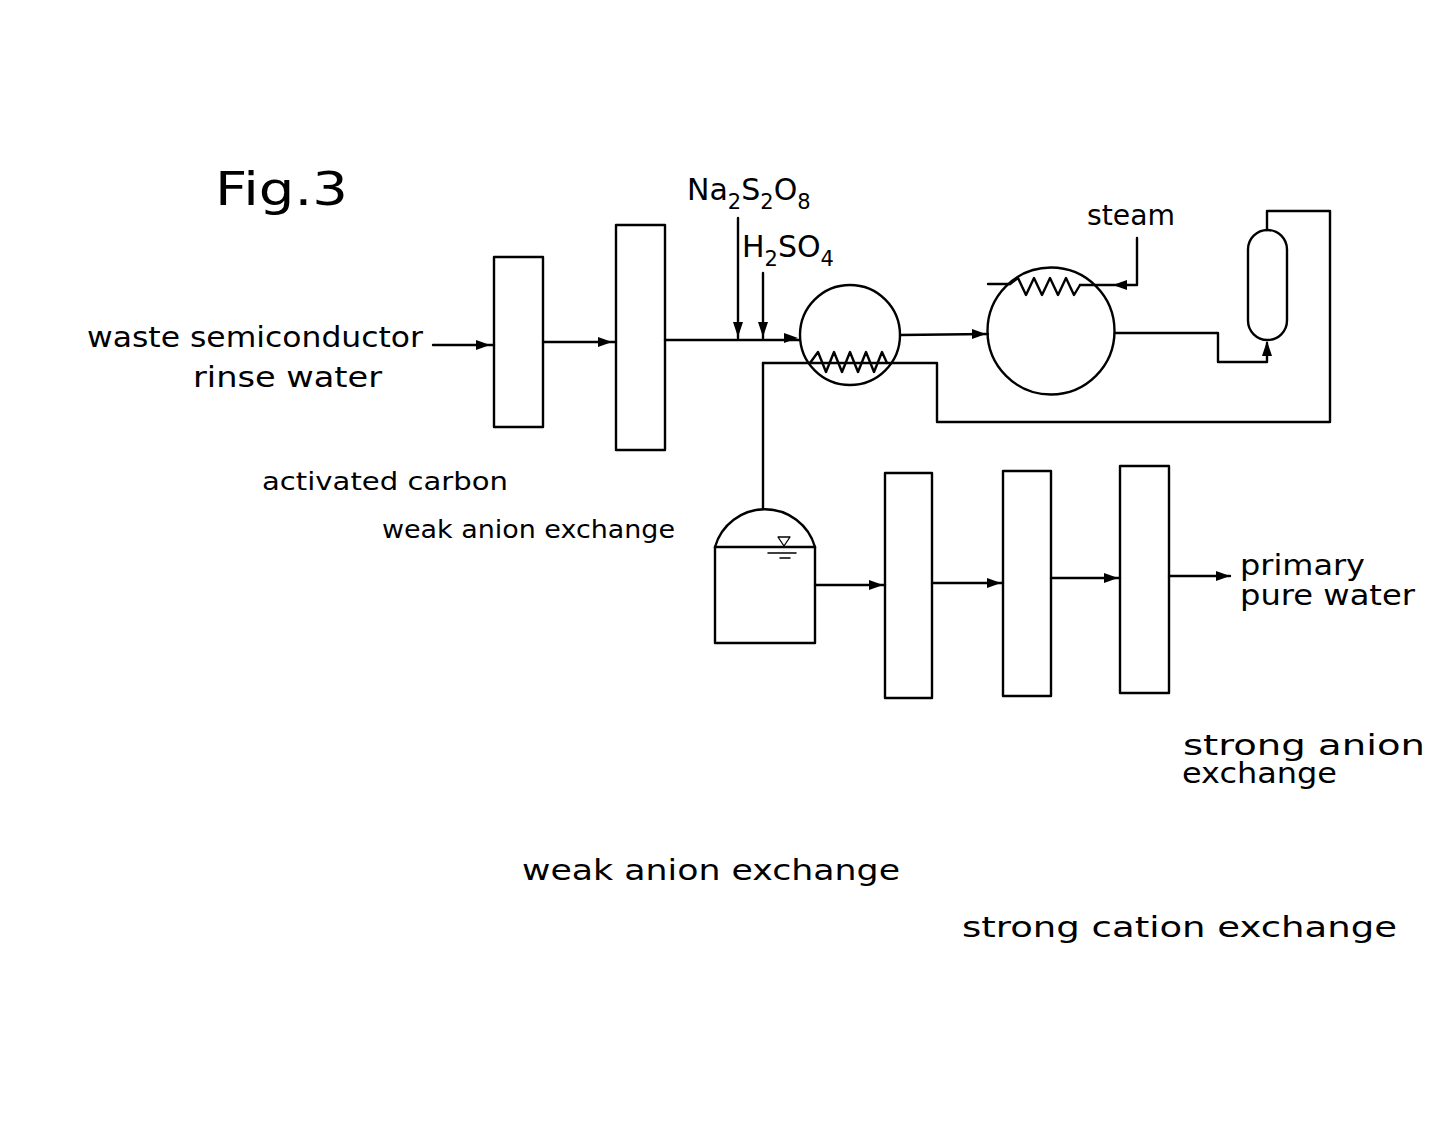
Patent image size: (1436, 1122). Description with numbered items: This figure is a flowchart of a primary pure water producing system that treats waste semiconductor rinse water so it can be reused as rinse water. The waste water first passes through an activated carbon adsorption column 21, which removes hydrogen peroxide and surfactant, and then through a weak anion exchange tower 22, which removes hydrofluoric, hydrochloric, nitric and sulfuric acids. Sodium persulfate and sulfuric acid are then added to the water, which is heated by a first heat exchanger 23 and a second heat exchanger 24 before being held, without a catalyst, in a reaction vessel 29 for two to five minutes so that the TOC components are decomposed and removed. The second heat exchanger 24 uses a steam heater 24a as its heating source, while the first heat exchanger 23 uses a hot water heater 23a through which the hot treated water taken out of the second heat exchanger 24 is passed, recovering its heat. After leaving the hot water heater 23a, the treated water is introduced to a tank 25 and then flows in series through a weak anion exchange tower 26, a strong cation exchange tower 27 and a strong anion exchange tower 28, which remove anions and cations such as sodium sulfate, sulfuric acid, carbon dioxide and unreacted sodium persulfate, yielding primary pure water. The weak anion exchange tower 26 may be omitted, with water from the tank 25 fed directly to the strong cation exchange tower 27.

The activated carbon adsorption column 21 is at (525, 427).
The weak anion exchange tower 22 is at (650, 450).
The first heat exchanger 23 is at (860, 287).
The hot water heater 23a is at (852, 385).
The second heat exchanger 24 is at (1112, 365).
The steam heater 24a is at (1068, 292).
The tank 25 is at (778, 643).
The weak anion exchange tower 26 is at (892, 700).
The strong cation exchange tower 27 is at (1020, 697).
The strong anion exchange tower 28 is at (1157, 693).
The reaction vessel 29 is at (1258, 236).